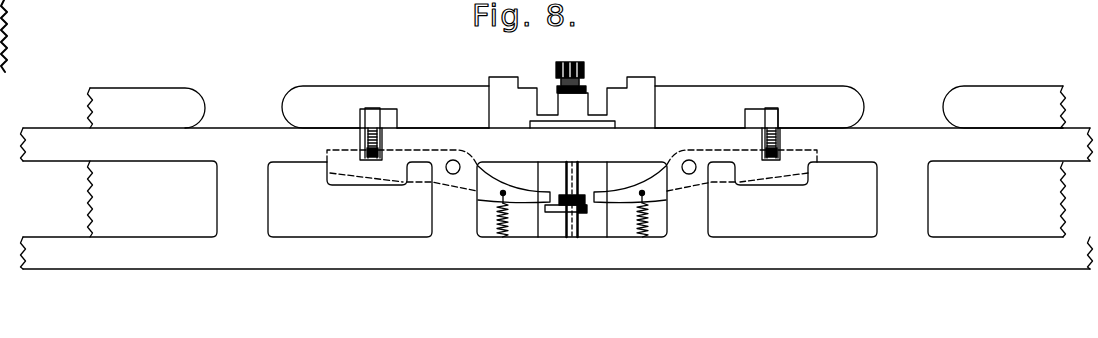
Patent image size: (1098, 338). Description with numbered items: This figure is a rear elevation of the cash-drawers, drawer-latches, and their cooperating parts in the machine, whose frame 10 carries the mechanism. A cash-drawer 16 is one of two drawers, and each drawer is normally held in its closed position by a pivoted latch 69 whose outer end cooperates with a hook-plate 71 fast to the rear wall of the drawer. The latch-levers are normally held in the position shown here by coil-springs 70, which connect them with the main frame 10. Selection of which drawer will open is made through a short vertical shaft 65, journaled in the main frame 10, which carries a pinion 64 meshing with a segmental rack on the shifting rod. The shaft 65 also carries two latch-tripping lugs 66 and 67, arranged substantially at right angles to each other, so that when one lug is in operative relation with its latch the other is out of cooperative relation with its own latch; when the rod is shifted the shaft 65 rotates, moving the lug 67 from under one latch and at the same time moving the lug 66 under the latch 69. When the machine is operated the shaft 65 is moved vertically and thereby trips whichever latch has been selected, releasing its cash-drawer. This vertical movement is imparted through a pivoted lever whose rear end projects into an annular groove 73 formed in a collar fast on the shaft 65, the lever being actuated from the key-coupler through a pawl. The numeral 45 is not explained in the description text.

The frame 10 is at (557, 173).
The cash-drawer 16 is at (350, 199).
The lower right block 45 is at (792, 199).
The hook-plate 71 is at (370, 123).
The pinion 64 is at (571, 66).
The annular groove 73 is at (587, 91).
The short vertical shaft 65 is at (567, 173).
The latch-tripping lug 67 is at (558, 213).
The latch-tripping lug 66 is at (583, 213).
The pivoted latch 69 is at (482, 204).
The coil-spring 70 is at (502, 237).